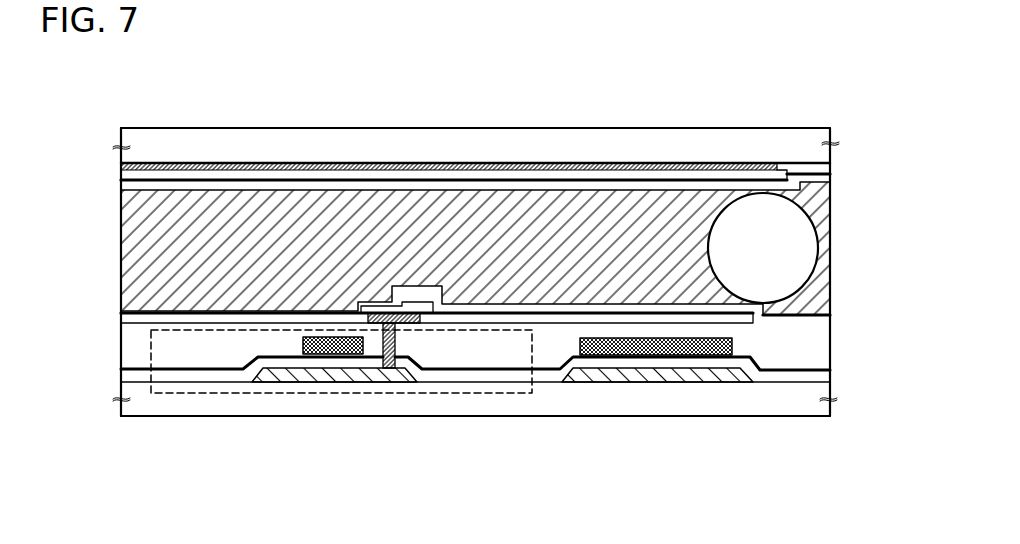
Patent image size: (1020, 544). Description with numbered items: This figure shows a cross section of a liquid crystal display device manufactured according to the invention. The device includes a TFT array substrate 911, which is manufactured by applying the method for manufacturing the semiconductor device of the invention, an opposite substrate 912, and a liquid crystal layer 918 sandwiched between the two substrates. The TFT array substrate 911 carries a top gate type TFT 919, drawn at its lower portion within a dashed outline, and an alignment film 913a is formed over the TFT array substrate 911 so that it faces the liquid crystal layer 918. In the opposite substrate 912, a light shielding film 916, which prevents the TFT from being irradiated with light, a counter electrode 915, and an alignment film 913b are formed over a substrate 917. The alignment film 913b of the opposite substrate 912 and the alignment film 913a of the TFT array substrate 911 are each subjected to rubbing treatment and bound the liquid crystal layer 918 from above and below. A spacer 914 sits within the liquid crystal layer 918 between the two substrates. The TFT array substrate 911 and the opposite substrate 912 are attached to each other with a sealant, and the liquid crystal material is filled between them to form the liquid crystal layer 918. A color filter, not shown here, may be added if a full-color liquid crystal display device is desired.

The TFT array substrate 911 is at (102, 332).
The opposite substrate 912 is at (103, 127).
The alignment film 913a is at (830, 314).
The alignment film 913b is at (832, 180).
The spacer 914 is at (818, 250).
The counter electrode 915 is at (832, 163).
The light shielding film 916 is at (267, 160).
The substrate 917 is at (385, 135).
The liquid crystal layer 918 is at (135, 265).
The top gate type TFT 919 is at (480, 395).